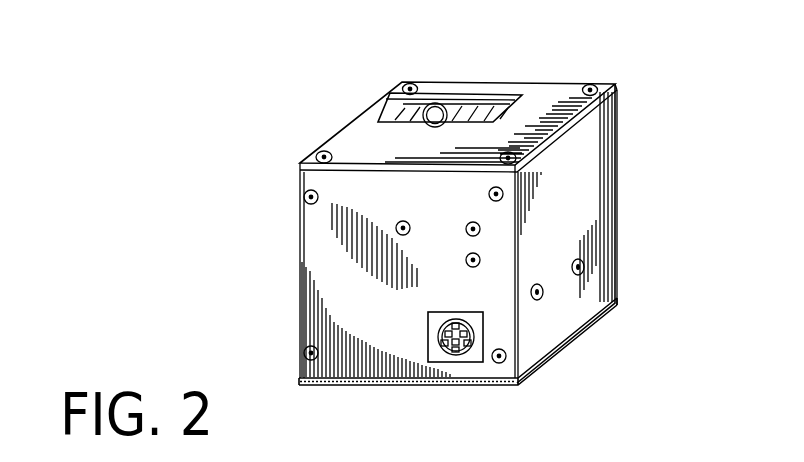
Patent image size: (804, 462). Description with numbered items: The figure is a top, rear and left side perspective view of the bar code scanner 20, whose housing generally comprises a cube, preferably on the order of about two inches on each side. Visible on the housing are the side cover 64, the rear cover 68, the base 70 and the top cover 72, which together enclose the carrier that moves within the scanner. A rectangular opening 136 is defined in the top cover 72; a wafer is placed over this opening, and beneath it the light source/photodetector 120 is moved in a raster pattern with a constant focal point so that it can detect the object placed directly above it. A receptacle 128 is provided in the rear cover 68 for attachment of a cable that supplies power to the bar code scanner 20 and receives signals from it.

The bar code scanner 20 is at (369, 229).
The side cover 64 is at (586, 175).
The rear cover 68 is at (399, 311).
The base 70 is at (385, 386).
The top cover 72 is at (445, 89).
The light source/photodetector 120 is at (433, 103).
The receptacle 128 is at (475, 357).
The rectangular opening 136 is at (497, 98).